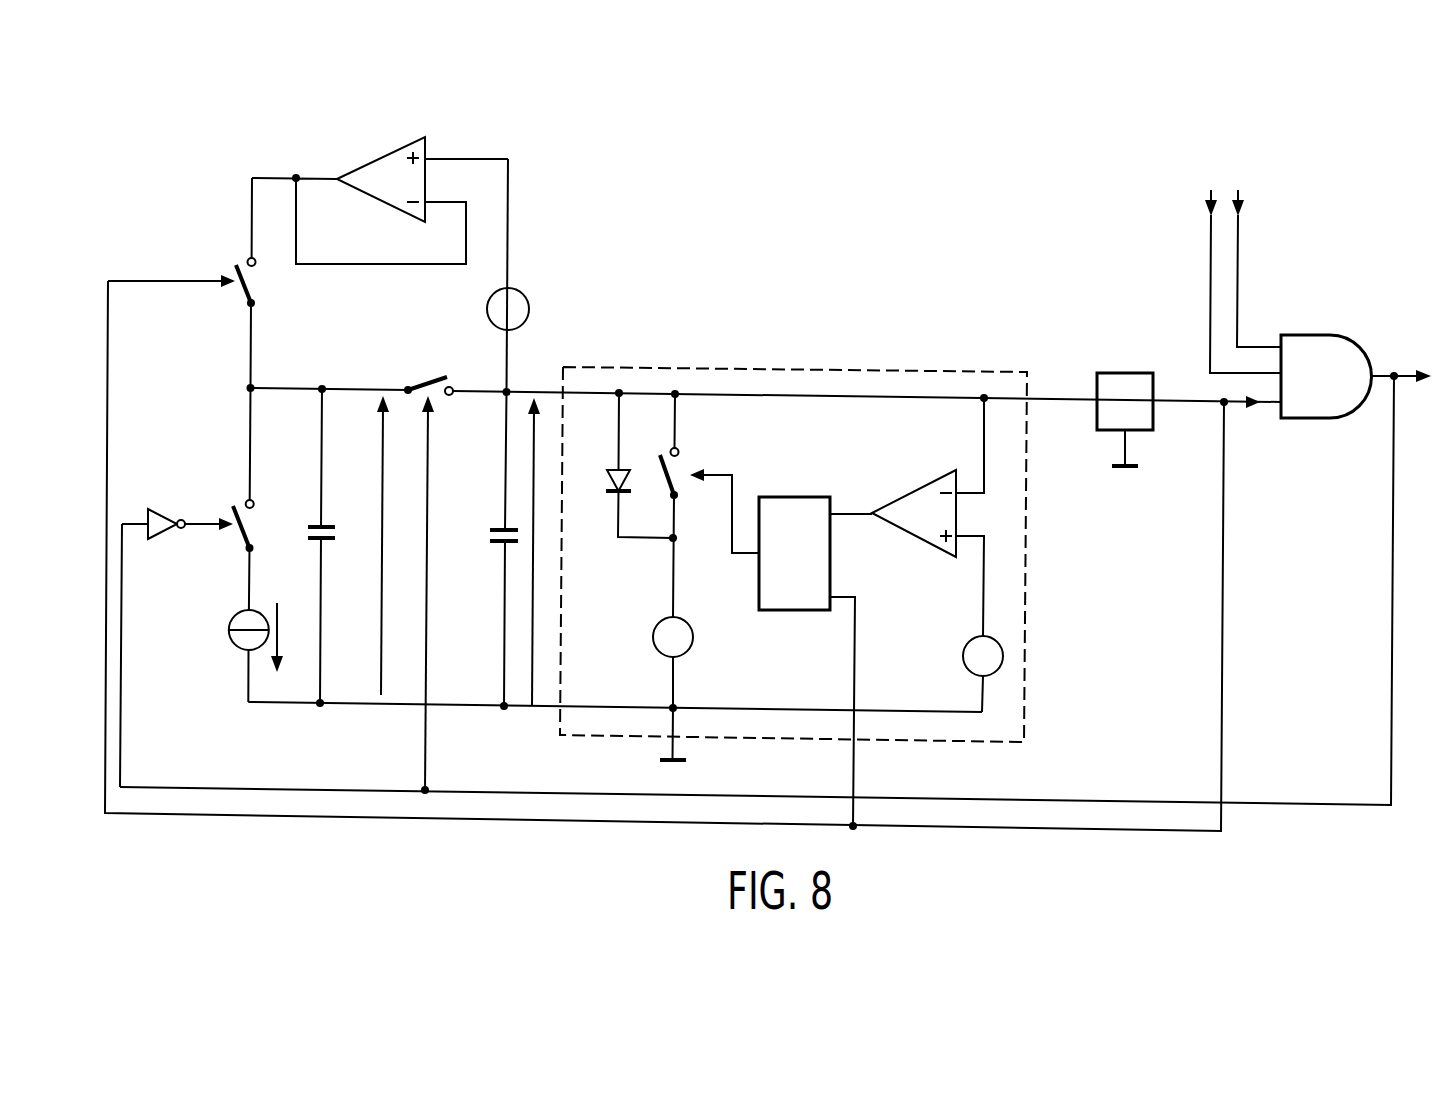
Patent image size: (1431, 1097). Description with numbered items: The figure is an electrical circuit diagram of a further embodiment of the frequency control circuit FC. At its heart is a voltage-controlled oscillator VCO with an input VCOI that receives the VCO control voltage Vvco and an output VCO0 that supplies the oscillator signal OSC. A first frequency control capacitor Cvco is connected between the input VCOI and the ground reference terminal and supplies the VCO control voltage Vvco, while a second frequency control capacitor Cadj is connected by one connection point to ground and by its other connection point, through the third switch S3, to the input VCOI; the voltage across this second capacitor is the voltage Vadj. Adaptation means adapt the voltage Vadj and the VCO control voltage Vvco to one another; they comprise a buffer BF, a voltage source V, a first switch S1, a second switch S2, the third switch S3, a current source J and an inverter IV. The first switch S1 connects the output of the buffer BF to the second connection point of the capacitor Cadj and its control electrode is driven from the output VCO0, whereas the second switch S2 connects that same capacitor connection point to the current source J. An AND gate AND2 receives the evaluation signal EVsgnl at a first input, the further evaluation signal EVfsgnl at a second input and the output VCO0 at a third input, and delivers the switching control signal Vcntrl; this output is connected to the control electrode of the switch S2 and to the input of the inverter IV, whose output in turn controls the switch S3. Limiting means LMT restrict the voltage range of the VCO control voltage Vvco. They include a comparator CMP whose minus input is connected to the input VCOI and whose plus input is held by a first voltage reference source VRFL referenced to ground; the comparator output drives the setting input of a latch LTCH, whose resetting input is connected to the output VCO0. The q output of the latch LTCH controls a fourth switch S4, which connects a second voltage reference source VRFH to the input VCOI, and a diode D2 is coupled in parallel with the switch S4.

The buffer BF is at (367, 165).
The first switch S1 is at (260, 291).
The second switch S2 is at (259, 517).
The third switch S3 is at (431, 375).
The fourth switch S4 is at (690, 467).
The inverter IV is at (161, 508).
The current source J is at (228, 634).
The voltage source V is at (530, 309).
The second frequency control capacitor Cadj is at (336, 531).
The first frequency control capacitor Cvco is at (485, 537).
The voltage across the second frequency control capacitor Vadj is at (381, 584).
The VCO control voltage Vvco is at (541, 598).
The limiting means LMT is at (827, 364).
The diode D2 is at (617, 468).
The latch LTCH is at (800, 495).
The comparator CMP is at (910, 490).
The second voltage reference source VRFH is at (697, 637).
The first voltage reference source VRFL is at (964, 646).
The voltage-controlled oscillator VCO is at (1127, 372).
The input of the voltage-controlled oscillator VCOI is at (1068, 401).
The output of the voltage-controlled oscillator VCO0 is at (1180, 403).
The oscillator signal OSC is at (1258, 408).
The AND gate AND2 is at (1308, 333).
The further evaluation signal EVfsgnl is at (1207, 228).
The evaluation signal EVsgnl is at (1242, 228).
The switching control signal Vcntrl is at (1380, 373).
The frequency control circuit FC is at (598, 861).